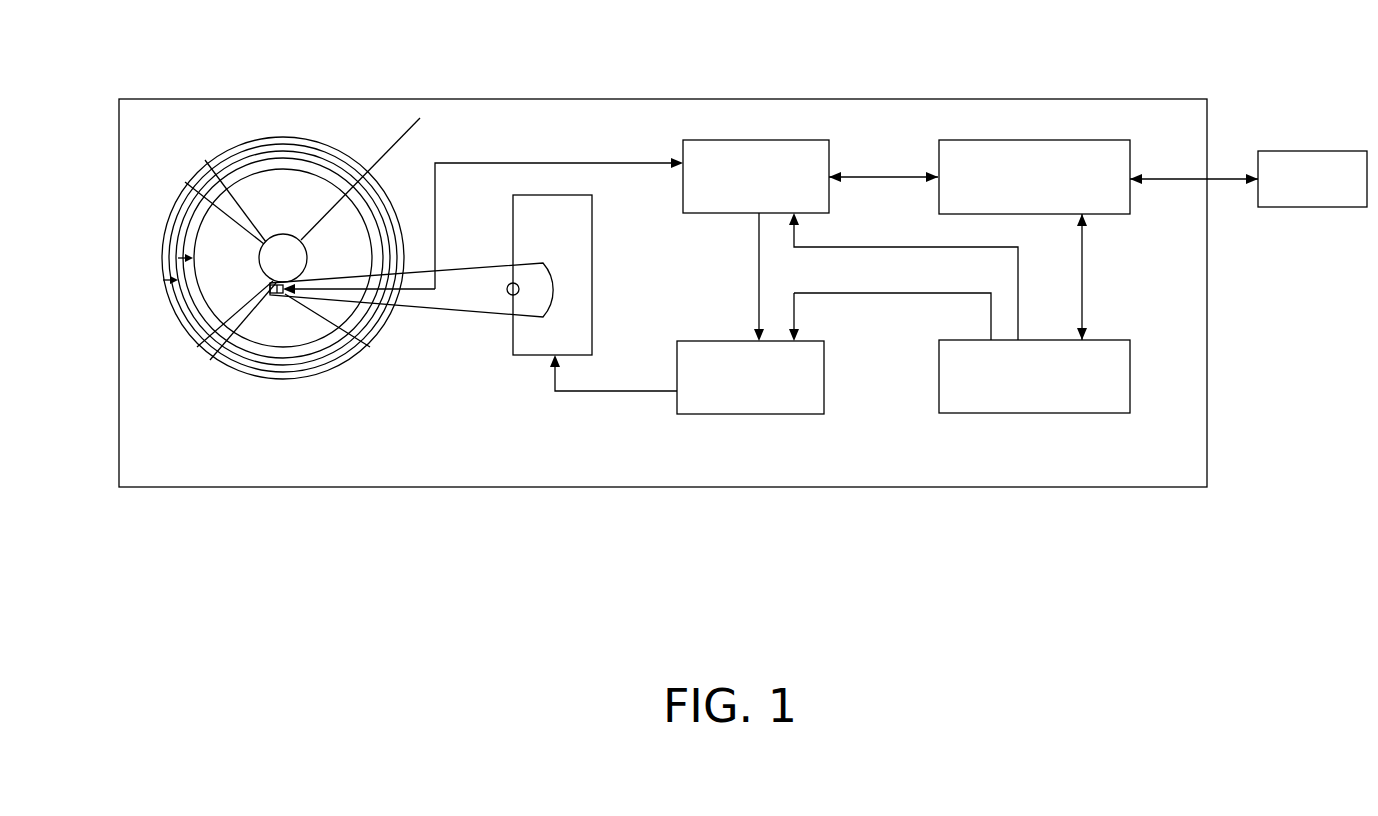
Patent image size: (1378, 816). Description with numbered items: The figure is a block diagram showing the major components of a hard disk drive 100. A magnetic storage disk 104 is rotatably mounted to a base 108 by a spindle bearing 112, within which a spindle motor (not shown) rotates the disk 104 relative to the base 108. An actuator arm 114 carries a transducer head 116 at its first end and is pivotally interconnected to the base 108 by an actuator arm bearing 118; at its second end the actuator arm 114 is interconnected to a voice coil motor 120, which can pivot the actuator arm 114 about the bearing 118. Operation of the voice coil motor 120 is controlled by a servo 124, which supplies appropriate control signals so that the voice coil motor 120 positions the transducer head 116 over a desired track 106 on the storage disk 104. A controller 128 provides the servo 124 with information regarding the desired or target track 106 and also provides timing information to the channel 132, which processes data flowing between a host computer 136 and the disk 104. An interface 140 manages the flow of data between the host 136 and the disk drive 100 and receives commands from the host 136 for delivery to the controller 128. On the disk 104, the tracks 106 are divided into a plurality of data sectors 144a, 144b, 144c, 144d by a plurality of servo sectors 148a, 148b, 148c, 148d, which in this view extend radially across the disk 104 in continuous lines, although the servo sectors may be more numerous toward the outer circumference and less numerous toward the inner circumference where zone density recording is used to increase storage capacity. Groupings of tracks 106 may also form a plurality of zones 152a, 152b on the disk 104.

The hard disk drive 100 is at (707, 90).
The magnetic storage disk 104 is at (277, 143).
The track 106 is at (260, 373).
The base 108 is at (517, 112).
The spindle bearing 112 is at (250, 190).
The actuator arm 114 is at (495, 300).
The transducer head 116 is at (273, 293).
The actuator arm bearing 118 is at (519, 289).
The voice coil motor 120 is at (575, 195).
The servo 124 is at (803, 414).
The controller 128 is at (1065, 413).
The channel 132 is at (768, 155).
The host computer 136 is at (1325, 151).
The interface 140 is at (997, 148).
The data sector 144a is at (215, 158).
The data sector 144b is at (340, 300).
The data sector 144c is at (320, 372).
The data sector 144d is at (173, 215).
The servo sector 148a is at (420, 118).
The servo sector 148b is at (370, 347).
The servo sector 148c is at (207, 345).
The servo sector 148d is at (207, 172).
The zone 152a is at (168, 280).
The zone 152b is at (178, 258).